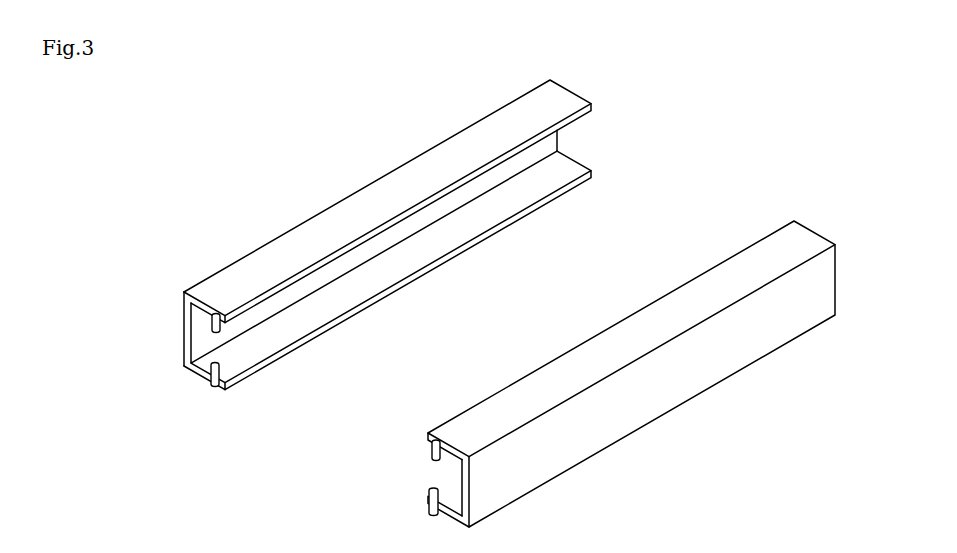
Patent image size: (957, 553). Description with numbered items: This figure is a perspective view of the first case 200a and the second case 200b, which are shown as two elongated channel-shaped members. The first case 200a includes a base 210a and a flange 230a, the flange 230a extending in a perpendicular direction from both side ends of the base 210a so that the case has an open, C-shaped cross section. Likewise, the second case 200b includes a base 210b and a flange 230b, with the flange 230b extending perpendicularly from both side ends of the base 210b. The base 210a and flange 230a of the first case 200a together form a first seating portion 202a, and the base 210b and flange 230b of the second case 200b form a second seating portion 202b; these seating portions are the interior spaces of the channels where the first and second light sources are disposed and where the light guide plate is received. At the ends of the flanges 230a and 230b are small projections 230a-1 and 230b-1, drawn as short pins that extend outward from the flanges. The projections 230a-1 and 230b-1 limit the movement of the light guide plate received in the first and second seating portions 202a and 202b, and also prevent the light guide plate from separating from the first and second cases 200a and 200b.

The first case 200a is at (588, 374).
The flange 230a is at (451, 430).
The base 210a is at (484, 466).
The first seating portion 202a is at (452, 468).
The projection 230a-1 is at (433, 447).
The second case 200b is at (329, 235).
The flange 230b is at (207, 286).
The base 210b is at (186, 320).
The second seating portion 202b is at (212, 337).
The projection 230b-1 is at (219, 326).